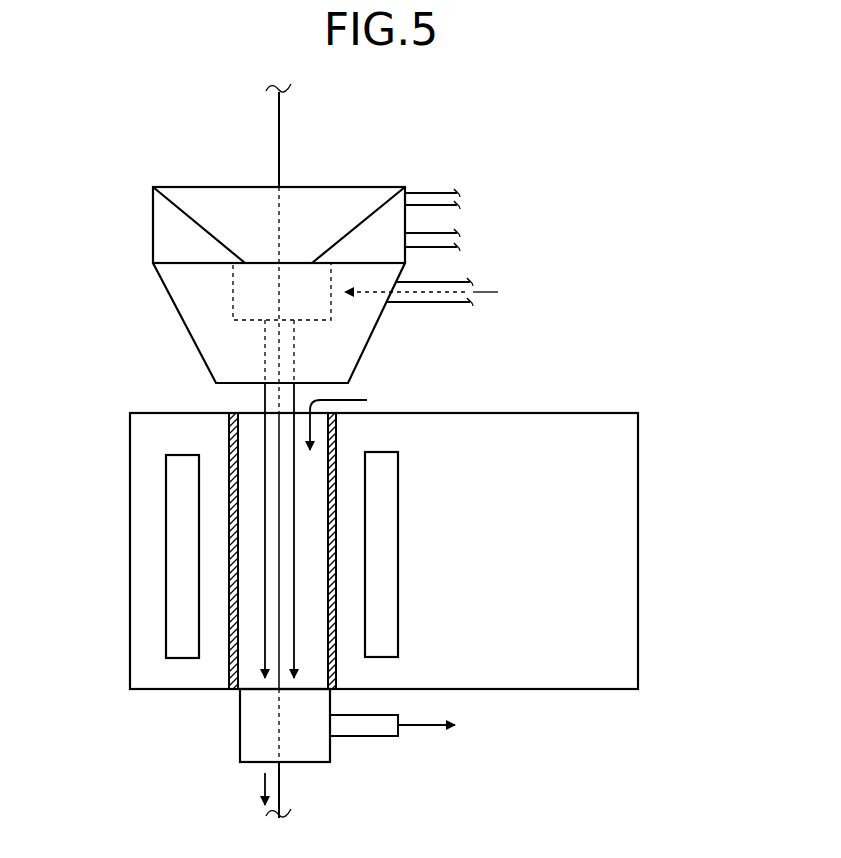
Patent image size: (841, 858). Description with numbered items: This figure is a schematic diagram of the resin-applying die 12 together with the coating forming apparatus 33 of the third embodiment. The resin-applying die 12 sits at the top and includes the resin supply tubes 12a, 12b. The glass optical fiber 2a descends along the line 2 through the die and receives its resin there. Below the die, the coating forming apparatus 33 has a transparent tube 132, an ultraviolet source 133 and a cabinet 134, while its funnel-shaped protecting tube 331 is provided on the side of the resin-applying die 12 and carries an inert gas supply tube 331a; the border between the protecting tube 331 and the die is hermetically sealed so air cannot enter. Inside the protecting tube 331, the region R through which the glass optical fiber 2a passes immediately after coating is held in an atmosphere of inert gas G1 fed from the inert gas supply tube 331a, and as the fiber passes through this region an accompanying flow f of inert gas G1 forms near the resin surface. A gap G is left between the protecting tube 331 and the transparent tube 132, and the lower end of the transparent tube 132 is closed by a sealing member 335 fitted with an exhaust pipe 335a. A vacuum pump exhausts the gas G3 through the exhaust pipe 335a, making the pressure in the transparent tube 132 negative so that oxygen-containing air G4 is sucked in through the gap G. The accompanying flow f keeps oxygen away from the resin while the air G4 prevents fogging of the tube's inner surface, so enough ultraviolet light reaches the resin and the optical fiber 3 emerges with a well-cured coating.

The wire 2 is at (281, 118).
The glass optical fiber 2a is at (265, 350).
The optical fiber 3 is at (284, 791).
The resin-applying die 12 is at (147, 197).
The resin supply tube 12a is at (441, 193).
The resin supply tube 12b is at (447, 233).
The coating forming apparatus 33 is at (589, 236).
The protecting tube 331 is at (186, 341).
The inert gas supply tube 331a is at (457, 282).
The sealing member 335 is at (240, 744).
The exhaust pipe 335a is at (360, 737).
The transparent tube 132 is at (229, 437).
The ultraviolet source 133 is at (166, 622).
The cabinet 134 is at (638, 550).
The region R is at (233, 277).
The accompanying flow f is at (265, 365).
The gap G is at (203, 399).
The inert gas G1 is at (498, 292).
The gas G3 is at (427, 727).
The air G4 is at (350, 399).